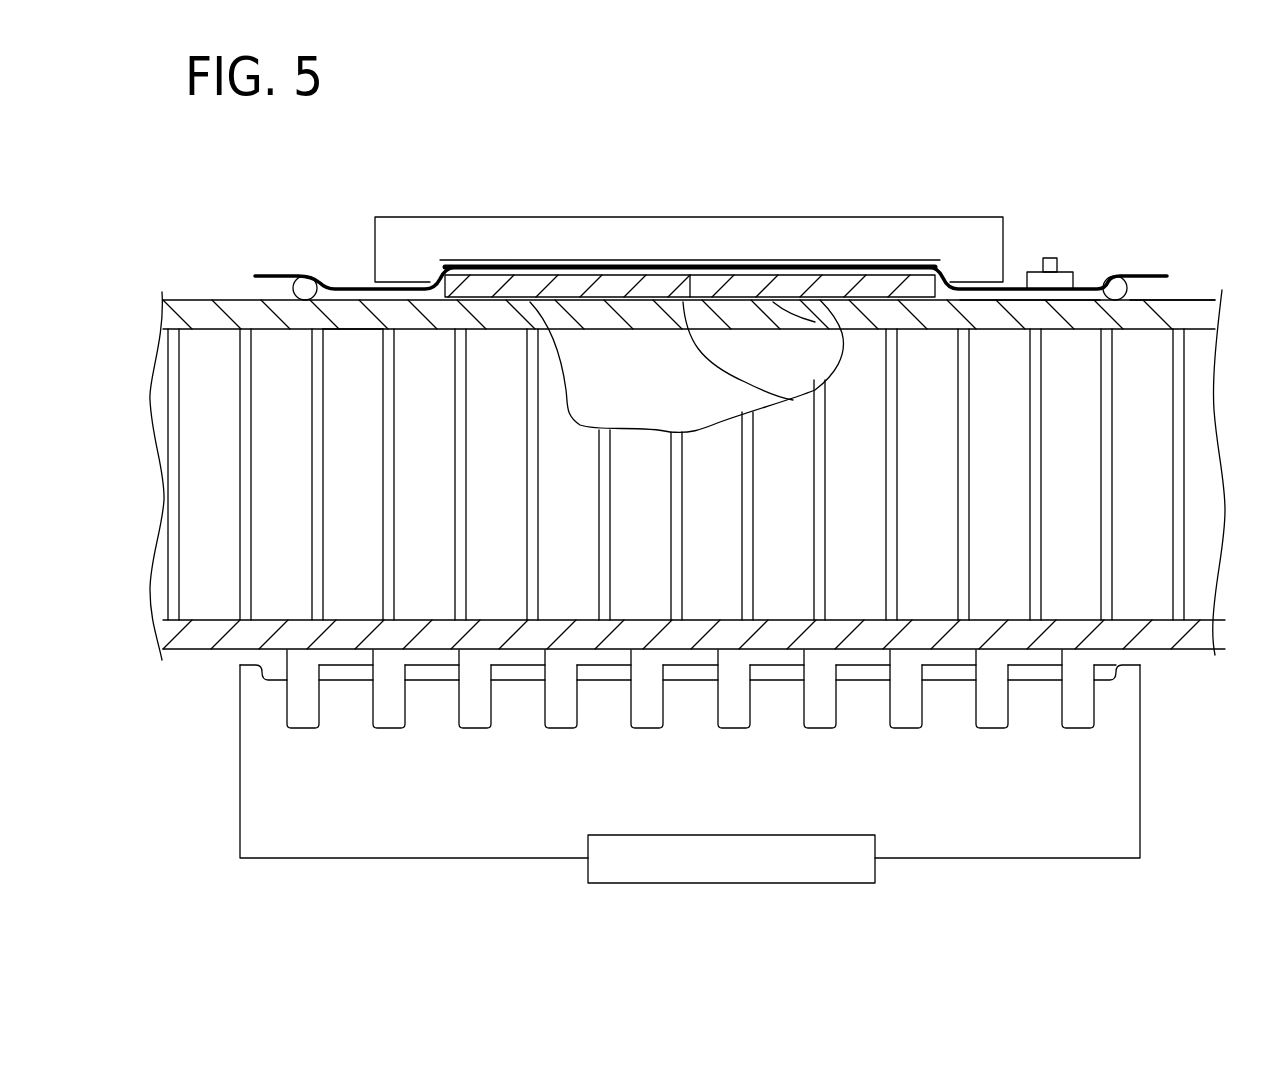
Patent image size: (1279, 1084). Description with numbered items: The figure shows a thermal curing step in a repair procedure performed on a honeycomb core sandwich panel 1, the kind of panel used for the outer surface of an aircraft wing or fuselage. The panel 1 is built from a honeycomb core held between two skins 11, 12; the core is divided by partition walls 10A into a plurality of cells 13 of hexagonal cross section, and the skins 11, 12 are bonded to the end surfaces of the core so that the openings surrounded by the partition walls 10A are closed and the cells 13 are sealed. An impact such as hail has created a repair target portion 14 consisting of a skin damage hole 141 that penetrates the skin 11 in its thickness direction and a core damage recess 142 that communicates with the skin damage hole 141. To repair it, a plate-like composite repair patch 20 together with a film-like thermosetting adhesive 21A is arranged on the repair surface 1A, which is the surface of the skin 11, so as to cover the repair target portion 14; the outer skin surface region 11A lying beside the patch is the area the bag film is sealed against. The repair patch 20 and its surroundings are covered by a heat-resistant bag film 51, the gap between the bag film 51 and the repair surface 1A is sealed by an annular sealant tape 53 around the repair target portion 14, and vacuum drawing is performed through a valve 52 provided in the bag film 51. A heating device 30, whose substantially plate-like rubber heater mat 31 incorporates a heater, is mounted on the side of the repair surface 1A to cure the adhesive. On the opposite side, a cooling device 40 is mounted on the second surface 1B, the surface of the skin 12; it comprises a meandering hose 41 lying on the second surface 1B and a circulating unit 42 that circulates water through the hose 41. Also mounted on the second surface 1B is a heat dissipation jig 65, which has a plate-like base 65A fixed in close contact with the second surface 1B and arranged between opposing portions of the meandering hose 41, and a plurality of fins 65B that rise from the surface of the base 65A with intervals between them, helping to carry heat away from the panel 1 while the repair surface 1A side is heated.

The honeycomb core sandwich panel 1 is at (705, 474).
The repair surface 1A is at (1008, 297).
The second surface 1B is at (1048, 682).
The partition wall 10A is at (327, 587).
The skin 11 is at (1213, 298).
The upper surface of top plate 11A is at (1177, 298).
The skin 12 is at (1220, 657).
The cell 13 is at (284, 605).
The repair target portion 14 is at (690, 206).
The skin damage hole 141 is at (773, 290).
The core damage recess 142 is at (693, 290).
The repair patch 20 is at (478, 264).
The thermosetting adhesive 21A is at (541, 259).
The heating device 30 is at (689, 196).
The heater mat 31 is at (412, 216).
The cooling device 40 is at (690, 800).
The hose 41 is at (447, 683).
The circulating unit 42 is at (745, 833).
The bag film 51 is at (358, 282).
The valve 52 is at (1063, 270).
The sealant tape 53 is at (303, 287).
The heat dissipation jig 65 is at (690, 731).
The base 65A is at (963, 683).
The fin 65B is at (732, 733).